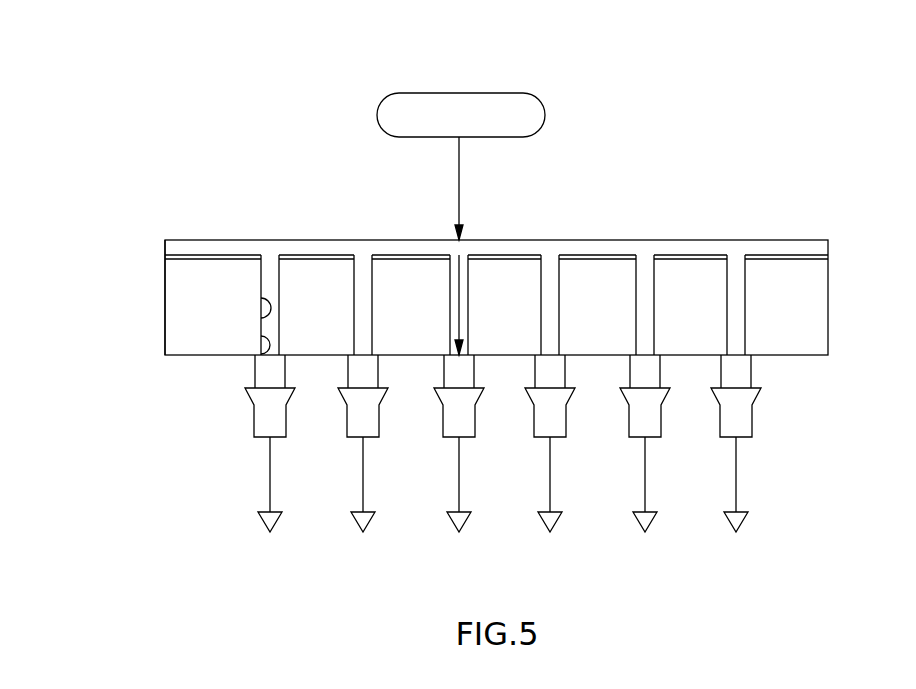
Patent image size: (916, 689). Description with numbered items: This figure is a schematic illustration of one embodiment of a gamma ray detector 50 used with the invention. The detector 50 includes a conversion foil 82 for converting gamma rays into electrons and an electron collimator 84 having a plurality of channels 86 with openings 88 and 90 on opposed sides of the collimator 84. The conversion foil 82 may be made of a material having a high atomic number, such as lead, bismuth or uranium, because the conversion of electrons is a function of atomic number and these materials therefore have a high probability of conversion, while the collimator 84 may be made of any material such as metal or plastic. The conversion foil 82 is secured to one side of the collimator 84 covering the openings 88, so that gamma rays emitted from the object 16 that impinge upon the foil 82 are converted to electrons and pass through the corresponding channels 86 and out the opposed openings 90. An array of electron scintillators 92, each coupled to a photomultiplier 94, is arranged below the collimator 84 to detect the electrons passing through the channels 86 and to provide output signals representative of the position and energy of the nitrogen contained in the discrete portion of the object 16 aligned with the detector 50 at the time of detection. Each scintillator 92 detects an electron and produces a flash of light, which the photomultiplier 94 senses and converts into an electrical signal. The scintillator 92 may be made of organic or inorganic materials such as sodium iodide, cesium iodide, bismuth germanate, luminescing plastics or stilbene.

The object 16 is at (425, 93).
The detector 50 is at (243, 153).
The conversion foil 82 is at (602, 240).
The electron collimator 84 is at (165, 283).
The channels 86 is at (262, 318).
The openings 88 is at (265, 263).
The openings 90 is at (257, 338).
The electron scintillators 92 is at (535, 365).
The photomultiplier 94 is at (565, 421).